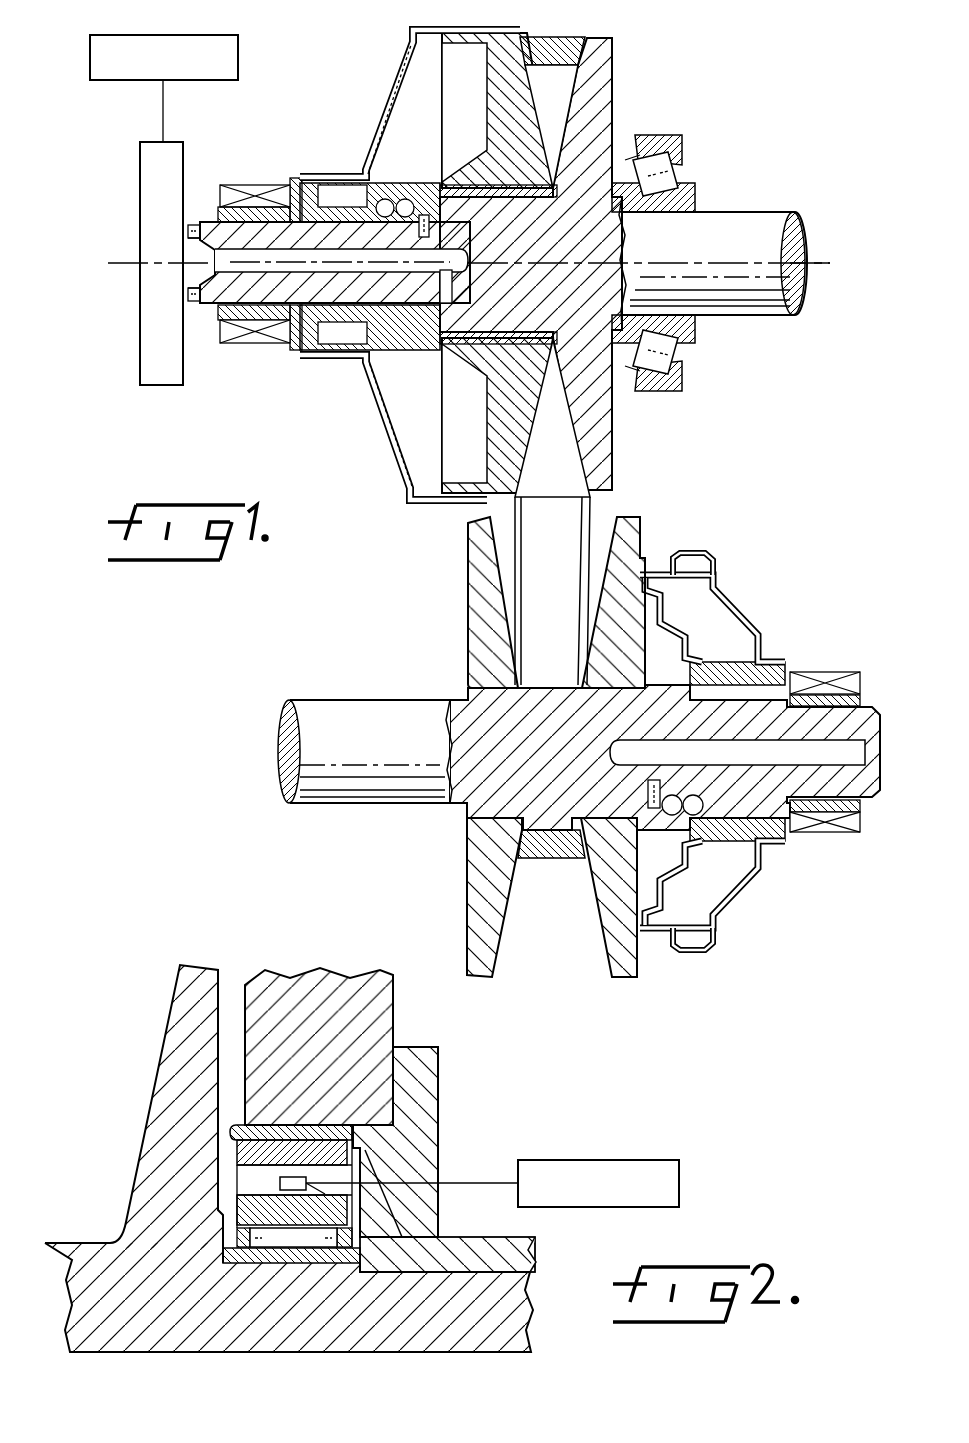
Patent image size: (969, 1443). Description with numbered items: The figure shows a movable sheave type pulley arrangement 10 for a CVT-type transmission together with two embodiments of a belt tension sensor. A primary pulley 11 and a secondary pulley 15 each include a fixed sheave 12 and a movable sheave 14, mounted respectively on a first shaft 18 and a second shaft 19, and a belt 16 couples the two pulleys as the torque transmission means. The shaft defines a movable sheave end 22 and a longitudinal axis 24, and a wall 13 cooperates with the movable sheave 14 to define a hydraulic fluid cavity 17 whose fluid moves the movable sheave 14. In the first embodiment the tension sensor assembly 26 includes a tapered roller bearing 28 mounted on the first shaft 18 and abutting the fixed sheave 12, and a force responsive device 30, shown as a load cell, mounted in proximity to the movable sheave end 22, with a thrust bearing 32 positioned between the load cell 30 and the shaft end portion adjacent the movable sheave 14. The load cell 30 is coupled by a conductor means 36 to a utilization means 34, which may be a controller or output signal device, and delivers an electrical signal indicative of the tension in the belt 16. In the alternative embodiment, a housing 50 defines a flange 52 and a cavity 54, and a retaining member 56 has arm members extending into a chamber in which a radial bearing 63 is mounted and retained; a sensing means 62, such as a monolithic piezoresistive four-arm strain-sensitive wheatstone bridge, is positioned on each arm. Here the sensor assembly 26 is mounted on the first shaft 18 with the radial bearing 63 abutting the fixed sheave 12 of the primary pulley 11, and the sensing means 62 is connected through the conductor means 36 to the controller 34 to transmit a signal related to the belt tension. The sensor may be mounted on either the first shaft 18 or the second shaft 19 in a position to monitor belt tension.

In FIG. 1, the movable sheave type pulley arrangement 10 is at (728, 468).
In FIG. 1, the primary pulley 11 is at (622, 76).
In FIG. 1, the fixed sheave 12 is at (615, 112).
In FIG. 2, the fixed sheave 12 is at (210, 962).
In FIG. 1, the wall 13 is at (407, 96).
In FIG. 1, the movable sheave 14 is at (517, 33).
In FIG. 1, the secondary pulley 15 is at (460, 595).
In FIG. 1, the belt 16 is at (583, 34).
In FIG. 1, the hydraulic fluid cavity 17 is at (476, 130).
In FIG. 1, the first shaft 18 is at (766, 226).
In FIG. 2, the first shaft 18 is at (520, 1312).
In FIG. 1, the second shaft 19 is at (315, 706).
In FIG. 1, the movable sheave end 22 is at (197, 222).
In FIG. 1, the longitudinal axis 24 is at (820, 262).
In FIG. 1, the tension sensor assembly 26 is at (138, 213).
In FIG. 2, the tension sensor assembly 26 is at (450, 1128).
In FIG. 1, the tapered roller bearing 28 is at (682, 150).
In FIG. 1, the force responsive device 30 is at (150, 330).
In FIG. 1, the thrust bearing 32 is at (192, 308).
In FIG. 1, the utilization means 34 is at (90, 52).
In FIG. 2, the utilization means 34 is at (650, 1160).
In FIG. 1, the conductor means 36 is at (163, 112).
In FIG. 2, the conductor means 36 is at (456, 1192).
In FIG. 2, the housing 50 is at (440, 1080).
In FIG. 2, the flange 52 is at (420, 1048).
In FIG. 2, the cavity 54 is at (272, 1168).
In FIG. 2, the retaining member 56 is at (245, 1152).
In FIG. 2, the sensing means 62 is at (320, 1193).
In FIG. 2, the radial bearing 63 is at (293, 1239).